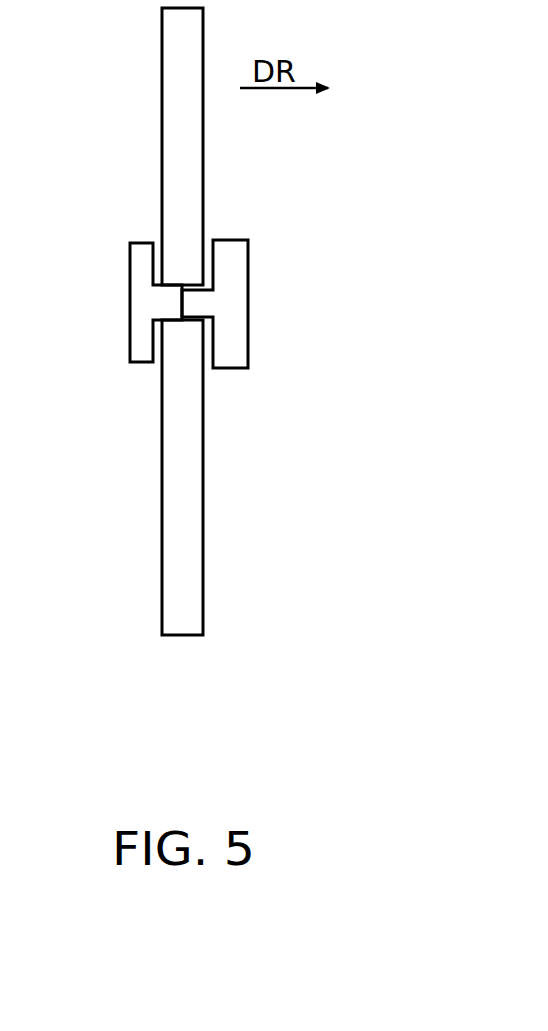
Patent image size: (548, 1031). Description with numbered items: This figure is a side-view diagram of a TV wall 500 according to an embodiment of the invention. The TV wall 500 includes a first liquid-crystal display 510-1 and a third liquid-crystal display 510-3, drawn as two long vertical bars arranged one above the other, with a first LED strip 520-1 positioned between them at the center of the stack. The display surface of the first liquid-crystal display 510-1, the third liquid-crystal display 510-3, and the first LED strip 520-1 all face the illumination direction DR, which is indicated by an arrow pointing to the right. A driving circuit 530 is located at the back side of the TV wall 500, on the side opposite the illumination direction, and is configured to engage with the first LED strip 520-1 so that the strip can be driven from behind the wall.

The TV wall 500 is at (395, 667).
The first liquid-crystal display 510-1 is at (172, 120).
The third liquid-crystal display 510-3 is at (172, 478).
The first LED strip 520-1 is at (237, 303).
The driving circuit 530 is at (140, 302).